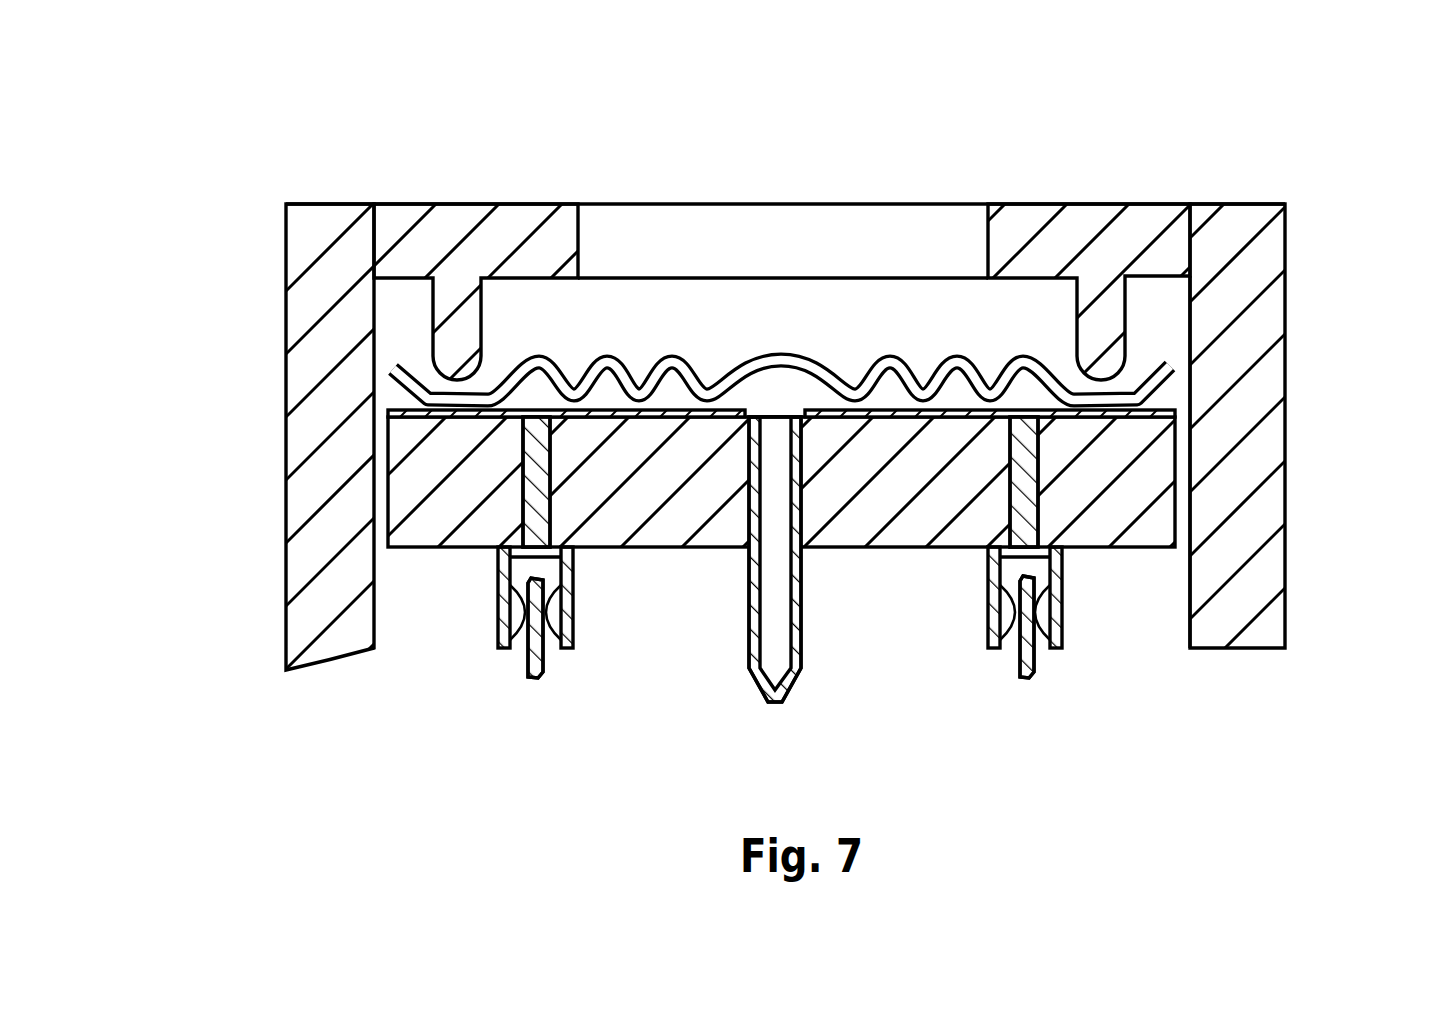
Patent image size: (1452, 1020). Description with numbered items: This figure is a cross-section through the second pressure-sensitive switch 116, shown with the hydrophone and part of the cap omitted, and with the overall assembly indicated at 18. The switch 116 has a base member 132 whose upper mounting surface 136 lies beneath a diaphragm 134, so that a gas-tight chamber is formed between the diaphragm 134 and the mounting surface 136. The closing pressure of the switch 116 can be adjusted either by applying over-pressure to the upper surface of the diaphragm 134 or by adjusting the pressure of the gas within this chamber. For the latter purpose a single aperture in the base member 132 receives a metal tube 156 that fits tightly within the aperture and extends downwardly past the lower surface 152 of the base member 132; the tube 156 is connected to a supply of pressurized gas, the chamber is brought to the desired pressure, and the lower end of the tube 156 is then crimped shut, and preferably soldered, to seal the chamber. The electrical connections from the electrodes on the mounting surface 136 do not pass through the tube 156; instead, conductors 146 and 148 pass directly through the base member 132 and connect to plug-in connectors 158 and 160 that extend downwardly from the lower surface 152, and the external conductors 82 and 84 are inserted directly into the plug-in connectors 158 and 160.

The sensor assembly 18 is at (388, 183).
The diaphragm 134 is at (988, 327).
The second pressure-sensitive switch 116 is at (1180, 385).
The base member 132 is at (716, 492).
The mounting surface 136 is at (490, 418).
The conductor 148 is at (524, 465).
The conductor 146 is at (1018, 497).
The metal tube 156 is at (752, 613).
The plug-in connector 160 is at (493, 643).
The conductor 84 is at (532, 680).
The plug-in connector 158 is at (1057, 623).
The conductor 82 is at (1037, 675).
The lower surface 152 is at (485, 548).